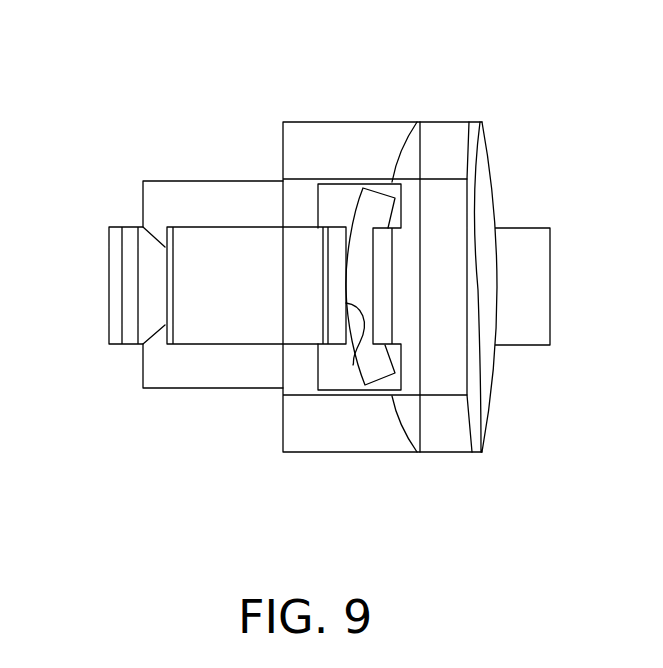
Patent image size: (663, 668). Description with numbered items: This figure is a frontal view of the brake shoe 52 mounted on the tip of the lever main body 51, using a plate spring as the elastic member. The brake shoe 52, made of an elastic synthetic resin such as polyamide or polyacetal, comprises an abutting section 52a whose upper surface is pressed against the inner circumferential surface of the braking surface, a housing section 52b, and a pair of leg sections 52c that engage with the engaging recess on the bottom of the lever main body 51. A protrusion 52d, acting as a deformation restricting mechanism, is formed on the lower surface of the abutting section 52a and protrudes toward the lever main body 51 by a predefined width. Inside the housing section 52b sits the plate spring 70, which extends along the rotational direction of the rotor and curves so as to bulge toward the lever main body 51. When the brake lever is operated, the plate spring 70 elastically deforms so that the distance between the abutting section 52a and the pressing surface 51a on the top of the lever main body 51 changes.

The lever main body 51 is at (205, 285).
The pressing surface 51a is at (353, 365).
The brake shoe 52 is at (523, 117).
The abutting section 52a is at (472, 163).
The housing section 52b is at (380, 140).
The leg sections 52c is at (190, 378).
The protrusion 52d is at (383, 272).
The plate spring 70 is at (368, 208).